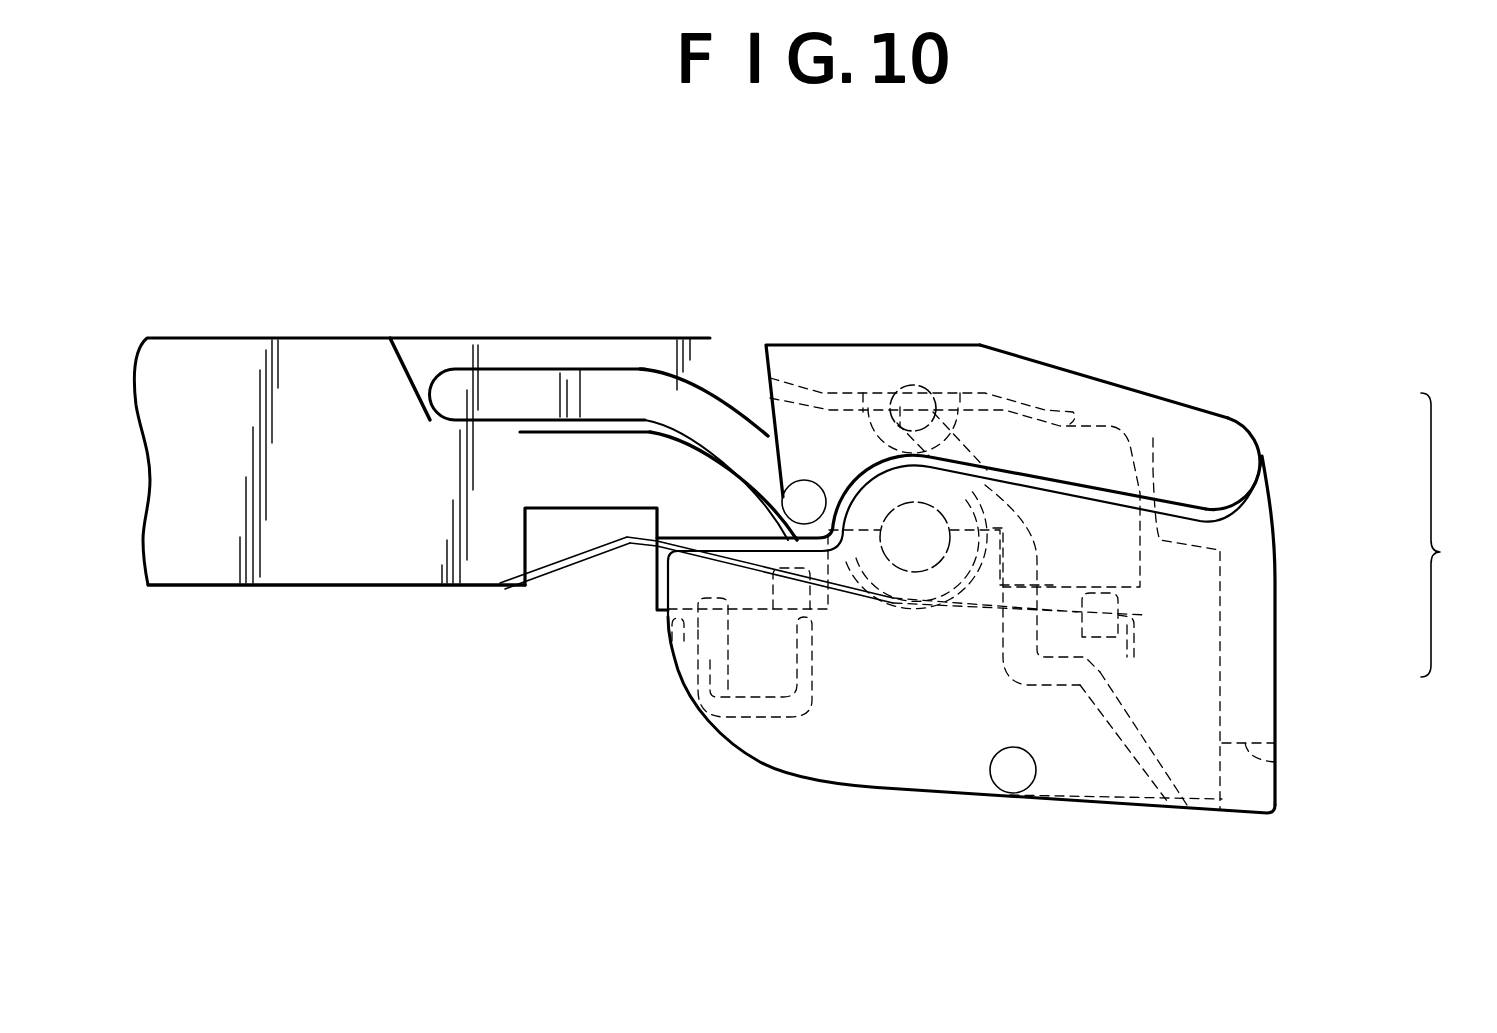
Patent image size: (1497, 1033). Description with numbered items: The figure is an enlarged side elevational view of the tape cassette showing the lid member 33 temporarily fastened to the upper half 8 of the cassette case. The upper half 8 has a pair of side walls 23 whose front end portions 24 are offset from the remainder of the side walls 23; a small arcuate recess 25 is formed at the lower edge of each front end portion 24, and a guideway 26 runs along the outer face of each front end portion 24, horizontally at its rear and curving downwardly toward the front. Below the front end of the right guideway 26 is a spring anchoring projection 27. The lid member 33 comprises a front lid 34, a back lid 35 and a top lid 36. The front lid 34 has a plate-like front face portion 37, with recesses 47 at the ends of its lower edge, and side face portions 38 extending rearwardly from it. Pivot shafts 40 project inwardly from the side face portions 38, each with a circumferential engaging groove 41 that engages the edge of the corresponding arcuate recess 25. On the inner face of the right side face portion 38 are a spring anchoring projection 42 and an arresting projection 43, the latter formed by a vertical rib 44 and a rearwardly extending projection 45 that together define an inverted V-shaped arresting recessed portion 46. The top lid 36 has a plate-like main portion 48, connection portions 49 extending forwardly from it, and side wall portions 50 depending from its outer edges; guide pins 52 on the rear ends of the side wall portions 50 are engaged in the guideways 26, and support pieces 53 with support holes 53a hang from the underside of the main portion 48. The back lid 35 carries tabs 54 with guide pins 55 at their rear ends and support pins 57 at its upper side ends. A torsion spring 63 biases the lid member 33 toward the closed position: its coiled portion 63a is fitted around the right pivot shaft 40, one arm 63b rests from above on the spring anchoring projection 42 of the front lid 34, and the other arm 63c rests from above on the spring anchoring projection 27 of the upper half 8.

The upper half 8 is at (240, 350).
The side walls 23 is at (244, 566).
The guideways 26 is at (470, 380).
The front end portions 24 is at (730, 372).
The spring anchoring projection 27 is at (770, 605).
The arm 63c is at (562, 555).
The side wall portions 50 is at (948, 348).
The top lid 36 is at (1167, 395).
The connection portions 49 is at (1237, 462).
The guide pins 52 is at (803, 480).
The support pins 57 is at (915, 385).
The support pieces 53 is at (840, 405).
The support hole 53a is at (897, 423).
The main portion 48 is at (1072, 408).
The small arcuate recesses 25 is at (945, 510).
The engaging grooves 41 is at (923, 575).
The pivot shafts 40 is at (892, 592).
The torsion spring 63 is at (857, 593).
The coiled portion 63a is at (983, 615).
The arm 63b is at (1147, 627).
The spring anchoring projection 42 is at (1097, 640).
The back lid 35 is at (1130, 703).
The rib 44 is at (740, 712).
The arresting projection 43 is at (710, 705).
The arresting recessed portion 46 is at (700, 668).
The projection 45 is at (686, 670).
The side face portions 38 is at (858, 760).
The front lid 34 is at (1276, 664).
The guide pins 55 is at (1000, 745).
The tabs 54 is at (1117, 799).
The front face portion 37 is at (1187, 803).
The recesses 47 is at (1275, 748).
The lid member 33 is at (1452, 570).